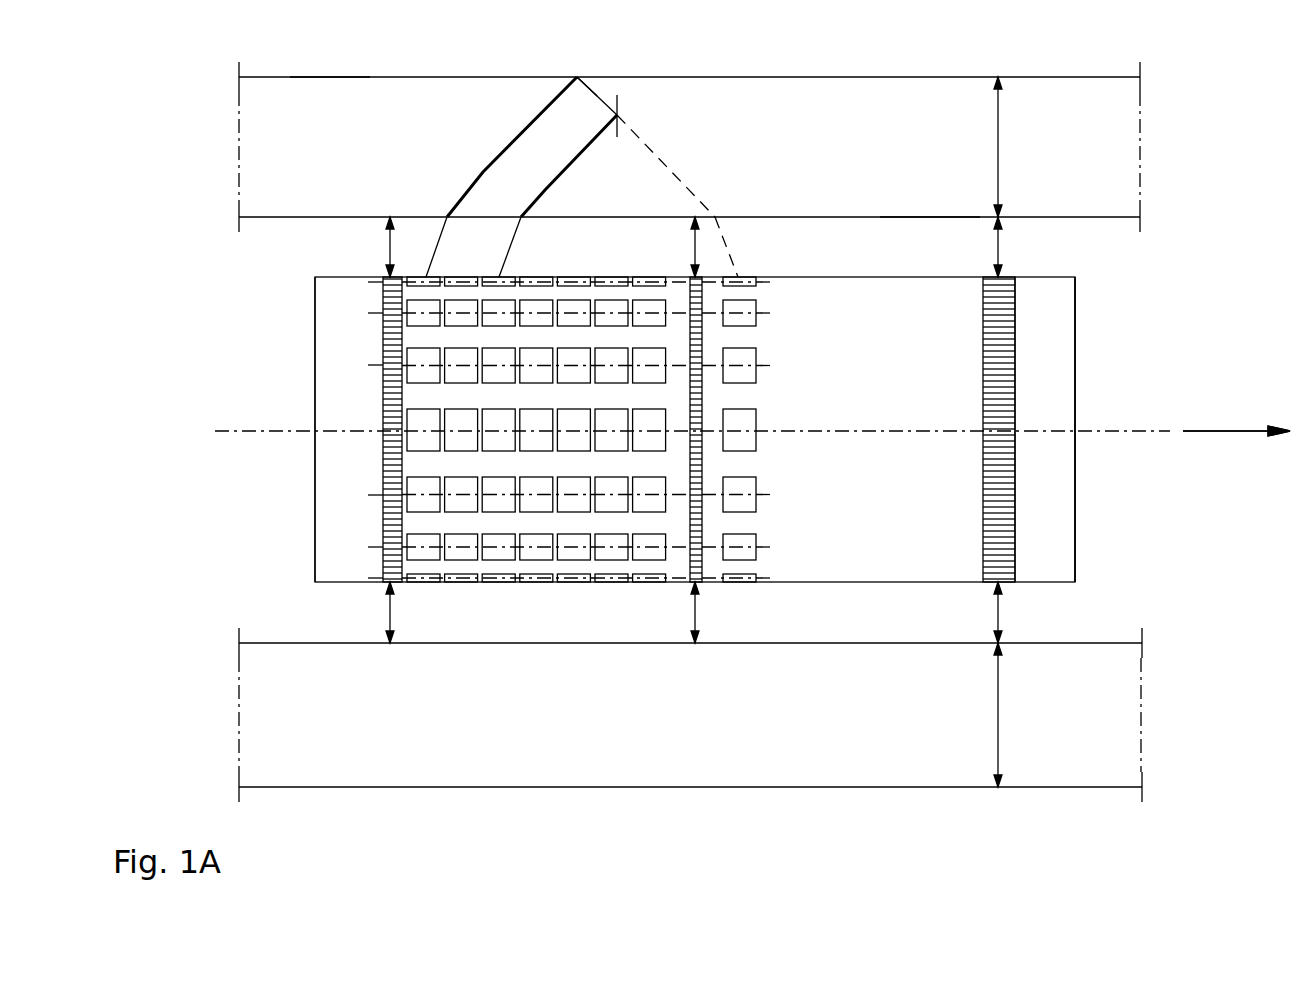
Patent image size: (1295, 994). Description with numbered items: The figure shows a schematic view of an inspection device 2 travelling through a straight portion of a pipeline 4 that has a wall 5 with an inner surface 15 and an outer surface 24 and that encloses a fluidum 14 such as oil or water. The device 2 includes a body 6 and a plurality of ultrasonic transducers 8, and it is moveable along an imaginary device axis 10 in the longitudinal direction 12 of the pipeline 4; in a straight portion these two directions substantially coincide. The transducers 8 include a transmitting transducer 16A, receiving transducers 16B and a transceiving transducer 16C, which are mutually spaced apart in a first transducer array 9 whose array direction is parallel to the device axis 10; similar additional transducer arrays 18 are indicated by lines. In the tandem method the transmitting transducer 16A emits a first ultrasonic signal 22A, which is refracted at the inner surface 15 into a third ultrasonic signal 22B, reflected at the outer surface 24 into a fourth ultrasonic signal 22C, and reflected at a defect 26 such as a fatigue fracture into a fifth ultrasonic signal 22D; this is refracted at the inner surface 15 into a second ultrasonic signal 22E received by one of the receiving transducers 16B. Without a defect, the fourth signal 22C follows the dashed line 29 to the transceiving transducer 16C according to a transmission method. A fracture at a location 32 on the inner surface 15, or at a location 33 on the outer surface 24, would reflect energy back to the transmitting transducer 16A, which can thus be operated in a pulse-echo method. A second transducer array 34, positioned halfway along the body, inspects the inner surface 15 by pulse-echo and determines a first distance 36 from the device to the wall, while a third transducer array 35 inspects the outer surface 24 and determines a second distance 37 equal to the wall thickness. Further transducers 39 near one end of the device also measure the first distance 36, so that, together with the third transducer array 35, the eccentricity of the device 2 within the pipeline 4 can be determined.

The device 2 is at (237, 283).
The pipeline 4 is at (1145, 286).
The wall 5 is at (833, 103).
The body 6 is at (1076, 548).
The ultrasonic transducers 8 is at (1025, 496).
The first transducer array 9 is at (372, 443).
The device axis 10 is at (1228, 431).
The longitudinal direction 12 is at (1228, 431).
The fluidum 14 is at (927, 250).
The inner surface 15 is at (1107, 217).
The transmitting transducer 16A is at (425, 445).
The receiving transducers 16B is at (462, 445).
The transceiving transducer 16C is at (740, 445).
The additional transducer arrays 18 is at (372, 282).
The first ultrasonic signal 22A is at (434, 245).
The third ultrasonic signal 22B is at (485, 172).
The fourth ultrasonic signal 22C is at (602, 97).
The fifth ultrasonic signal 22D is at (543, 193).
The second ultrasonic signal 22E is at (508, 253).
The outer surface 24 is at (327, 77).
The defect 26 is at (620, 113).
The dashed line 29 is at (663, 157).
The location at the inner surface 32 is at (718, 220).
The location at the outer surface 33 is at (577, 78).
The second transducer array 34 is at (702, 395).
The third transducer array 35 is at (1015, 396).
The first distance 36 is at (390, 247).
The second distance 37 is at (998, 153).
The further transducers 39 is at (383, 393).